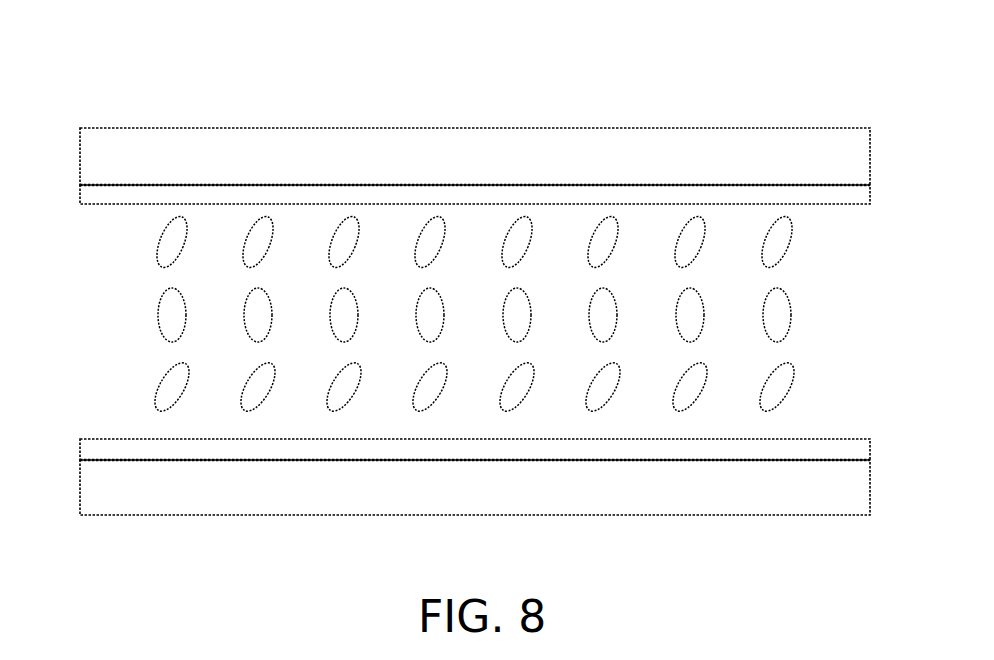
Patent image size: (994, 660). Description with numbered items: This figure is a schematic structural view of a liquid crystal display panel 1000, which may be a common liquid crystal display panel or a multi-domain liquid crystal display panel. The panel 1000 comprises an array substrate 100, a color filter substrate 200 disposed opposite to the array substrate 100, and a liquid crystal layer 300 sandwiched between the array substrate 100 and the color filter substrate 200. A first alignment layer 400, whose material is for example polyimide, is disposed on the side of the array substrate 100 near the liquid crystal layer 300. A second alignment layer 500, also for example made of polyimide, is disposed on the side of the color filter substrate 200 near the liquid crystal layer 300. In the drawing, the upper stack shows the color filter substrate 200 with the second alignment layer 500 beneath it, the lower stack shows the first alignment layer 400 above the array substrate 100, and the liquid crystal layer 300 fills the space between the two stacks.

The liquid crystal display panel 1000 is at (106, 60).
The color filter substrate 200 is at (853, 138).
The second alignment layer 500 is at (853, 193).
The liquid crystal layer 300 is at (80, 204).
The first alignment layer 400 is at (853, 452).
The array substrate 100 is at (853, 491).